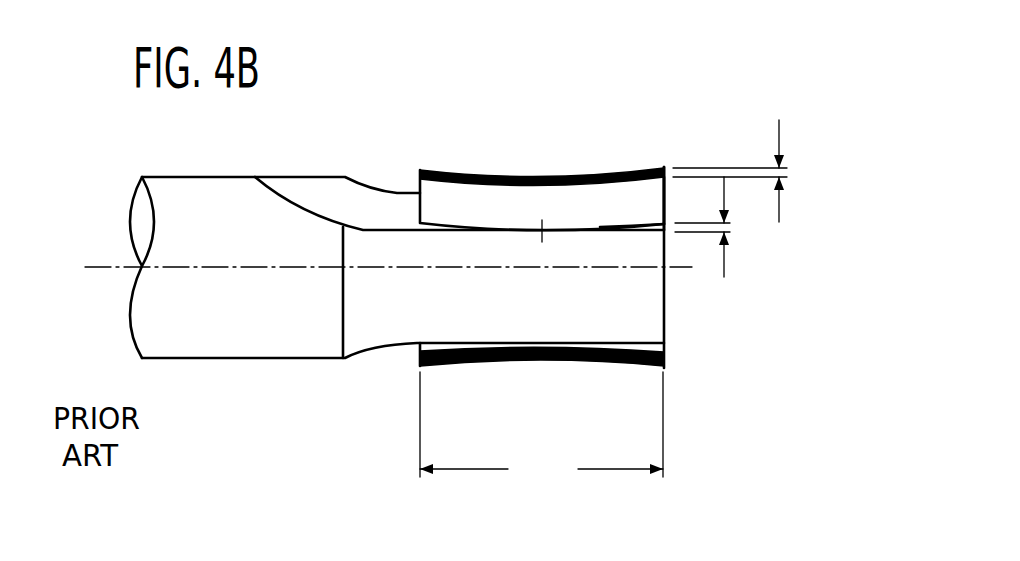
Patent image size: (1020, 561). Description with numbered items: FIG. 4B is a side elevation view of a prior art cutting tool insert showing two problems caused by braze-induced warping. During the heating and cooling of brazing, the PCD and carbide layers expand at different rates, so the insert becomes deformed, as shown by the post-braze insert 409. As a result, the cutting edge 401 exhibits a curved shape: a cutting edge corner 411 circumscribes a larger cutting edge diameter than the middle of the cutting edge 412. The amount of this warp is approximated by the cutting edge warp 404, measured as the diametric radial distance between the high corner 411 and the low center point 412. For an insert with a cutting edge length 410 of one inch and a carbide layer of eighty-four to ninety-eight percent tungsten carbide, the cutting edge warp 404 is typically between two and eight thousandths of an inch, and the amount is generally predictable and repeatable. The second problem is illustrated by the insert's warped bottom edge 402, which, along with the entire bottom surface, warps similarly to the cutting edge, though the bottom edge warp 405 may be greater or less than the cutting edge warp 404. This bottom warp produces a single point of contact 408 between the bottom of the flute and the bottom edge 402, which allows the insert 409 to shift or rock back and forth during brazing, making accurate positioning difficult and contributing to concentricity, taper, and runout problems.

The cutting edge 401 is at (493, 173).
The warped bottom edge 402 is at (632, 222).
The cutting edge warp 404 is at (736, 192).
The bottom edge warp 405 is at (710, 246).
The single point of contact 408 is at (542, 231).
The post-braze insert 409 is at (669, 198).
The cutting edge length 410 is at (541, 430).
The cutting edge corner 411 is at (665, 167).
The middle of the cutting edge 412 is at (542, 174).